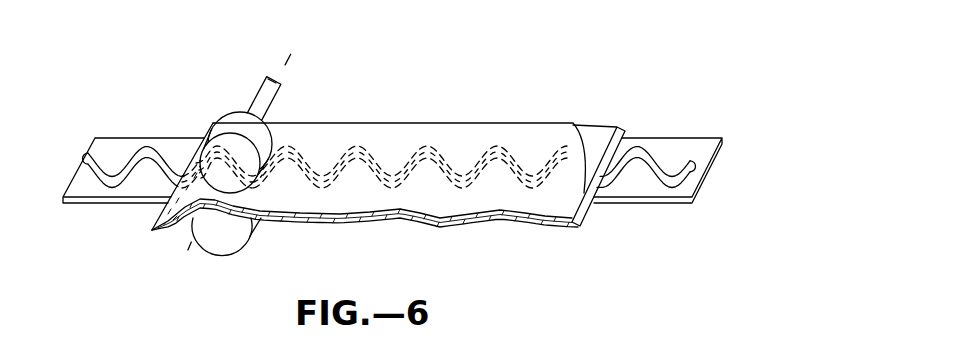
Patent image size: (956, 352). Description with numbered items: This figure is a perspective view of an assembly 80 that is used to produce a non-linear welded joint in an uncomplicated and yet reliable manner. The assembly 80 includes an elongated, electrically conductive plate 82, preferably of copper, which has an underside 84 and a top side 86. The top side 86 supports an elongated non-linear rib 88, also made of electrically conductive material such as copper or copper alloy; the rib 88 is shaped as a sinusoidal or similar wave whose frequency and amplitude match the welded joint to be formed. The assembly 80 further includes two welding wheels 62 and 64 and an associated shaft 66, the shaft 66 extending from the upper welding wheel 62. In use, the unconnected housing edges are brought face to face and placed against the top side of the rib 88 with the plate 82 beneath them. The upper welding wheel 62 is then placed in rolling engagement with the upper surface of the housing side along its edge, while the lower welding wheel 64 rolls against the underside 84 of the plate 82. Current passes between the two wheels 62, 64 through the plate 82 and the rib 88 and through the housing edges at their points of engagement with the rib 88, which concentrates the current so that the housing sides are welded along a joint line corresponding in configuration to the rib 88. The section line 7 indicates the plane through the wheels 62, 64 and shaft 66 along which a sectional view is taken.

The section line 7- 7 is at (293, 50).
The welding wheel 62 is at (233, 123).
The welding wheel 64 is at (243, 234).
The shaft 66 is at (278, 94).
The assembly 80 is at (500, 92).
The electrically conductive plate 82 is at (698, 203).
The underside 84 is at (600, 201).
The top side 86 is at (640, 182).
The non-linear rib 88 is at (667, 156).